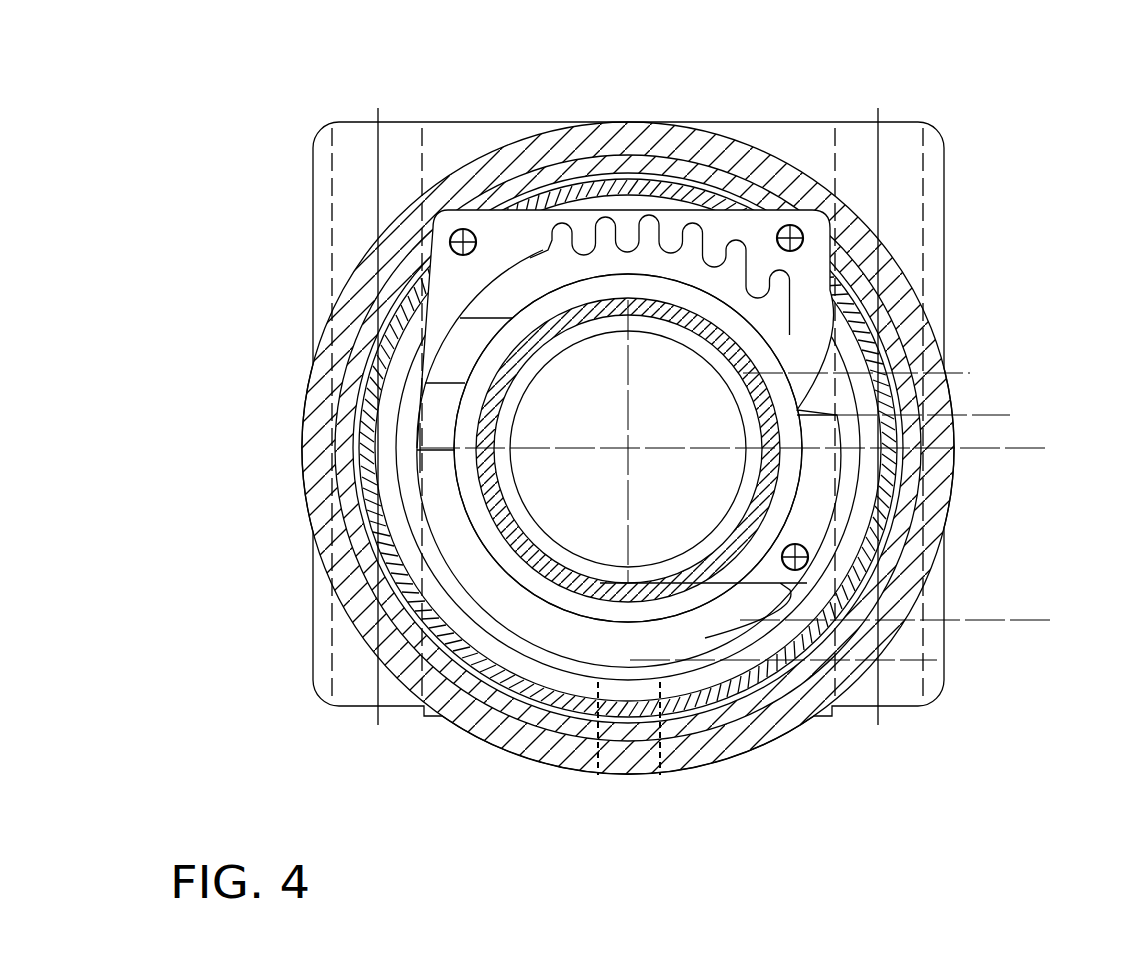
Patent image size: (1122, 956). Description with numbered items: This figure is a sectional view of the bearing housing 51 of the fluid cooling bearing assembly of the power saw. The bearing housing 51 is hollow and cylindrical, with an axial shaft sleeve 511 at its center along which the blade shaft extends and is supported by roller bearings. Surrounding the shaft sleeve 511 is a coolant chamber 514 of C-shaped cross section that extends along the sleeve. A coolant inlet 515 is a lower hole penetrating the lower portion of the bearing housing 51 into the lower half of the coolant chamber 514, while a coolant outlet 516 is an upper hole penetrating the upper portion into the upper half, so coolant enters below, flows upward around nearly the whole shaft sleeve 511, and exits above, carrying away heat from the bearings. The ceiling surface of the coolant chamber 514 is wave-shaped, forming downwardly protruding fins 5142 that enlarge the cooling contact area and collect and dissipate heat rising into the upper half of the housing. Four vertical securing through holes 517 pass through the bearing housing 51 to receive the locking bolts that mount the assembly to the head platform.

The bearing housing 51 is at (710, 400).
The shaft sleeve 511 is at (690, 501).
The coolant chamber 514 is at (657, 650).
The protruding fins 5142 is at (645, 222).
The coolant inlet 515 is at (915, 627).
The coolant outlet 516 is at (932, 378).
The vertical securing through holes 517 is at (378, 150).